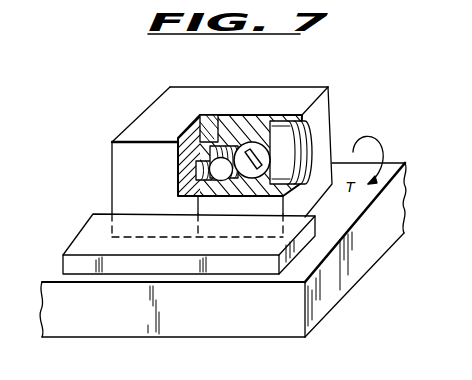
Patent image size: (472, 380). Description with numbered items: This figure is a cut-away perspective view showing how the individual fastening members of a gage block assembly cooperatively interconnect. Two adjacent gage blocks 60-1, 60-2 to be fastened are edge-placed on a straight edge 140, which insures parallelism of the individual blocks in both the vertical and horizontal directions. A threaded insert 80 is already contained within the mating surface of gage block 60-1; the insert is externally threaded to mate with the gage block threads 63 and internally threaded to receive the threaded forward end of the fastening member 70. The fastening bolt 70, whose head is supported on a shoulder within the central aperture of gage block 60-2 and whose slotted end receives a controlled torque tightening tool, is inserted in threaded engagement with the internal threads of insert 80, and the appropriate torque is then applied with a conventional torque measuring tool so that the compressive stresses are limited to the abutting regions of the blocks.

The gage block 60-1 is at (188, 76).
The gage block 60-2 is at (297, 93).
The fastening member 70 is at (294, 123).
The threaded insert 80 is at (222, 145).
The gage block threads 63 is at (302, 152).
The straight edge 140 is at (82, 236).